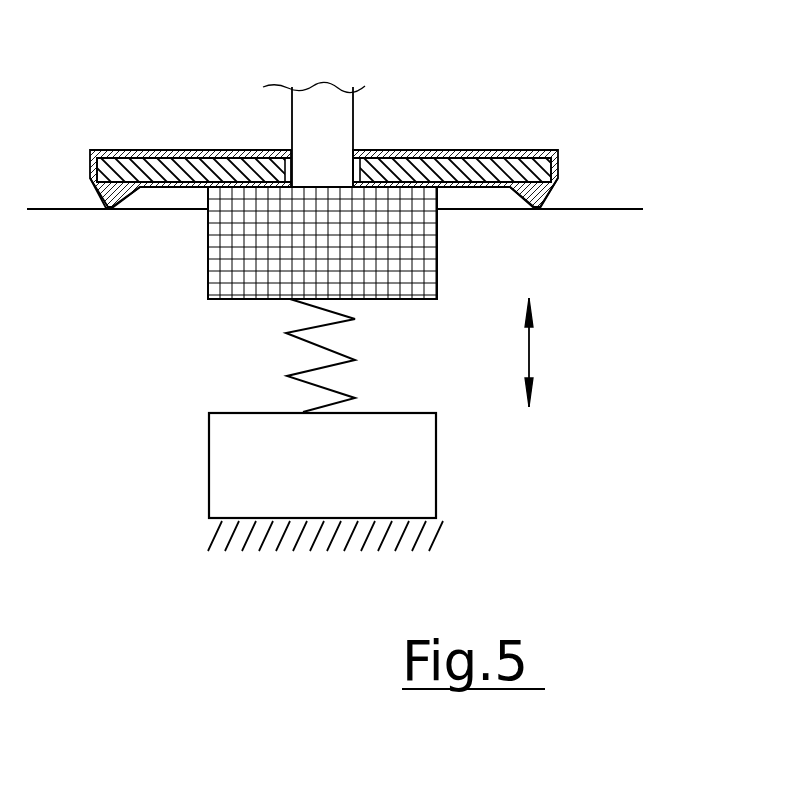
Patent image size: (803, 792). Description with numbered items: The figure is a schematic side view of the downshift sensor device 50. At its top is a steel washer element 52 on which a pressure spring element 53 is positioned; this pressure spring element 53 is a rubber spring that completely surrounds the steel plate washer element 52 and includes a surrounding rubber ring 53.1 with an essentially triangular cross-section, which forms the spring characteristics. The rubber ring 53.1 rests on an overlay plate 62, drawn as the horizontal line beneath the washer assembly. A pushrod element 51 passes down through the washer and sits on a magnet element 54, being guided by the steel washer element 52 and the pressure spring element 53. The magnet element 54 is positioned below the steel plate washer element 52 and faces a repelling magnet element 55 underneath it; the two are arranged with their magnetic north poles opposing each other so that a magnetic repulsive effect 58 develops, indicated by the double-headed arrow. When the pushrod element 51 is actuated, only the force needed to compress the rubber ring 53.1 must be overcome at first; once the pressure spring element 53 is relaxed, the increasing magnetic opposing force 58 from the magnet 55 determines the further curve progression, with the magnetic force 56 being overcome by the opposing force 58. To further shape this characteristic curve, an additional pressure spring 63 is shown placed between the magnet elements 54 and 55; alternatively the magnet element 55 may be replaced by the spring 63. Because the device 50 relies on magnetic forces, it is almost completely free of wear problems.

The downshift sensor device 50 is at (182, 117).
The pushrod element 51 is at (309, 130).
The steel washer element 52 is at (420, 150).
The magnetic force 56 is at (321, 141).
The pressure spring element 53 is at (108, 209).
The rubber ring 53.1 is at (548, 190).
The magnet element 54 is at (437, 247).
The repelling magnet element 55 is at (225, 478).
The magnetic repulsive effect 58 is at (531, 352).
The overlay plate 62 is at (63, 211).
The additional pressure spring 63 is at (305, 342).